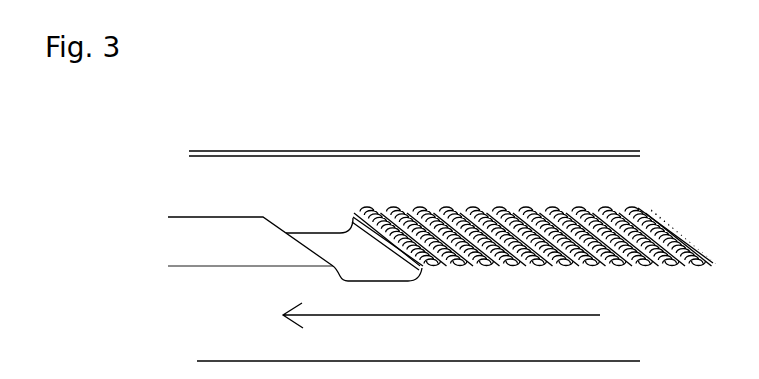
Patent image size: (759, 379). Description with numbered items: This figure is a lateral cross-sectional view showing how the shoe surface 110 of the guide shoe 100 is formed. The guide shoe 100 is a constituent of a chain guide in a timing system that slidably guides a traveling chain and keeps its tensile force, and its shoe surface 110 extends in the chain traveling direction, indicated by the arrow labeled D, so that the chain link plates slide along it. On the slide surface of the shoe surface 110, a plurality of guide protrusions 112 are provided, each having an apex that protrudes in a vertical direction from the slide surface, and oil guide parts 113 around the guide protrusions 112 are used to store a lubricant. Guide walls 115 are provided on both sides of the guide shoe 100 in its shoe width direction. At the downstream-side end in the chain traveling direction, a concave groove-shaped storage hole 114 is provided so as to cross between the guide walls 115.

The guide shoe 100 is at (560, 115).
The shoe surface 110 is at (237, 233).
The guide protrusions 112 is at (415, 204).
The oil guide parts 113 is at (460, 204).
The storage hole 114 is at (313, 228).
The guide walls 115 is at (332, 156).